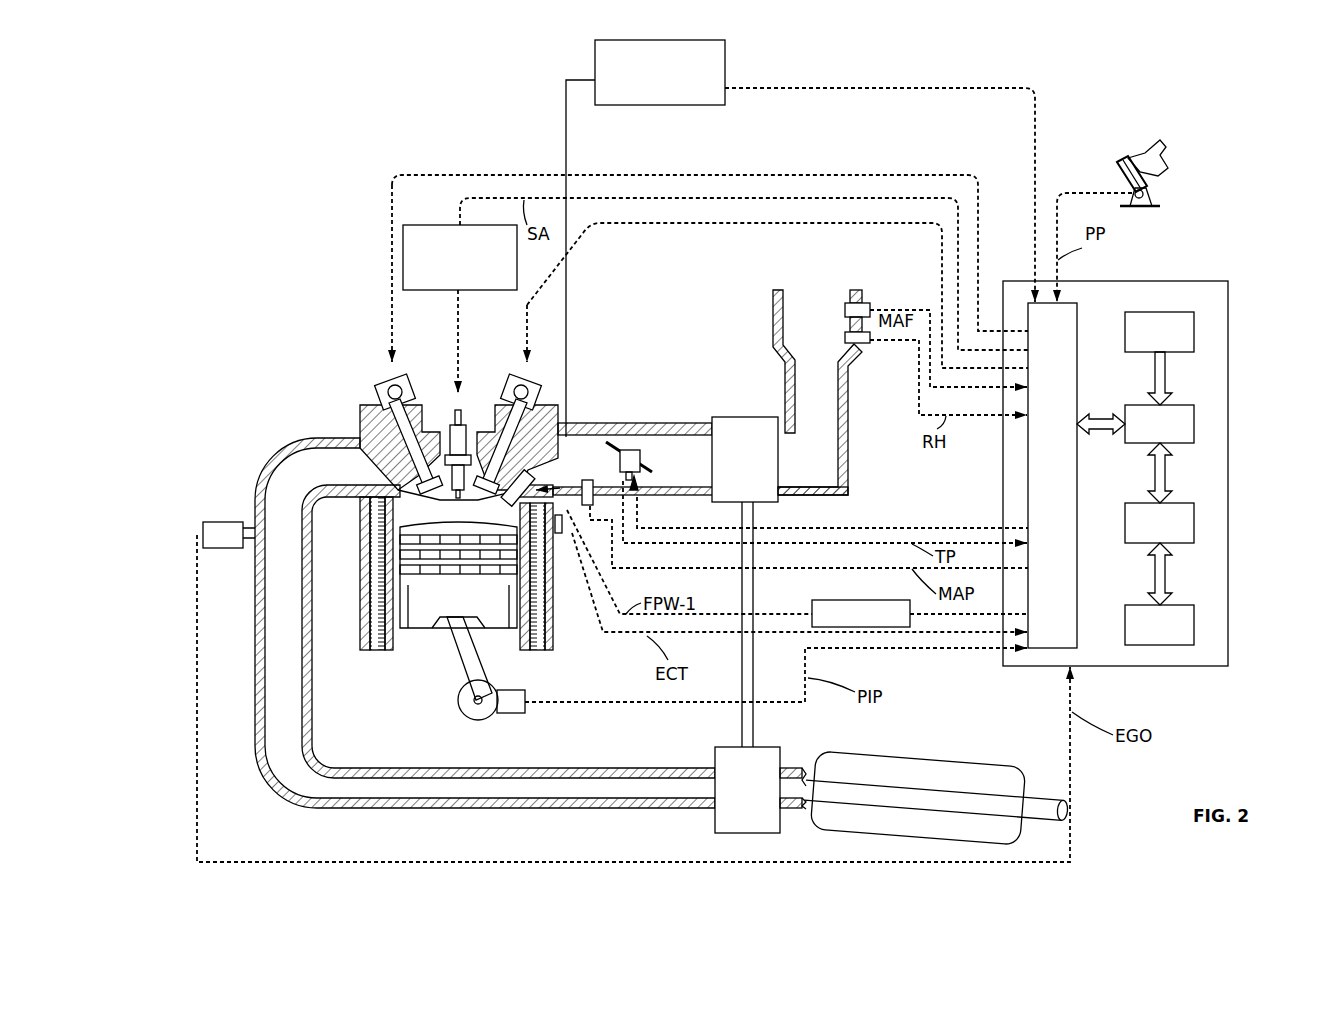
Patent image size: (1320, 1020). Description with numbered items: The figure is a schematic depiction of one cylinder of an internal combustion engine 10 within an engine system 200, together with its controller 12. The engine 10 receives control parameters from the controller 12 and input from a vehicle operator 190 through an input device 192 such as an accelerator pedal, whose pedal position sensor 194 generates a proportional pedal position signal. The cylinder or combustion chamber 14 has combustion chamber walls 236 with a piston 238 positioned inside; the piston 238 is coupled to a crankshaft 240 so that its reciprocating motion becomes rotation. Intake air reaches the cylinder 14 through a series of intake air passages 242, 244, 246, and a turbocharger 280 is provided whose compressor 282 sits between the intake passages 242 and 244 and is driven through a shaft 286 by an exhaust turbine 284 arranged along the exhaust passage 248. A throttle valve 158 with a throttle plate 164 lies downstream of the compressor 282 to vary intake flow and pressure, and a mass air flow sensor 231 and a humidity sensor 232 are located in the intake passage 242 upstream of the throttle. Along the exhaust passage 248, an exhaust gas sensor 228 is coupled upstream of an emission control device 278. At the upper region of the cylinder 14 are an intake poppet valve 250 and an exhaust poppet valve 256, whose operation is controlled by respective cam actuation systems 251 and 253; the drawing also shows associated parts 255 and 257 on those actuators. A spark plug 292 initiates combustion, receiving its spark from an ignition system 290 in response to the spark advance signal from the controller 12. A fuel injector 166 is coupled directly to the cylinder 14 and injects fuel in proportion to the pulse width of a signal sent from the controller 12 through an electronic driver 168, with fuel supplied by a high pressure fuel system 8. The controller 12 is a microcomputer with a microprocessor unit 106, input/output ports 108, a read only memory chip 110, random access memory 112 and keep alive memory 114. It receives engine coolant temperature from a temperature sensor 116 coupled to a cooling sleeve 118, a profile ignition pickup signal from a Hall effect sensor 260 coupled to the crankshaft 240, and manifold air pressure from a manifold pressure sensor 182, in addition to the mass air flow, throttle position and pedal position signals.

The high pressure fuel system 8 is at (726, 50).
The internal combustion engine 10 is at (305, 243).
The controller 12 is at (1225, 284).
The cylinder (combustion chamber) 14 is at (420, 525).
The microprocessor unit 106 is at (1196, 424).
The input/output ports 108 is at (1080, 312).
The read only memory (ROM) chip 110 is at (1196, 335).
The random access memory (RAM) 112 is at (1196, 523).
The keep alive memory (KAM) 114 is at (1196, 623).
The temperature sensor 116 is at (562, 536).
The cooling sleeve 118 is at (541, 605).
The throttle valve 158 is at (627, 448).
The throttle plate 164 is at (598, 443).
The fuel injector 166 is at (530, 486).
The electronic driver 168 is at (812, 602).
The manifold pressure sensor 182 is at (600, 520).
The vehicle operator 190 is at (1170, 152).
The input device 192 is at (1122, 170).
The pedal position sensor 194 is at (1152, 194).
The engine system 200 is at (180, 112).
The exhaust gas sensor 228 is at (203, 526).
The mass air flow sensor 231 is at (863, 301).
The humidity sensor 232 is at (858, 345).
The combustion chamber walls 236 is at (400, 642).
The piston 238 is at (443, 606).
The crankshaft 240 is at (468, 714).
The intake air passage 242 is at (830, 322).
The intake air passage 244 is at (698, 470).
The intake air passage 246 is at (597, 470).
The exhaust passage 248 is at (346, 476).
The intake poppet valve 250 is at (483, 456).
The cam actuation system 251 is at (508, 378).
The cam actuation system 253 is at (404, 378).
The intake valve position sensor 255 is at (540, 397).
The exhaust poppet valve 256 is at (354, 432).
The exhaust valve position sensor 257 is at (378, 394).
The Hall effect sensor 260 is at (511, 715).
The emission control device 278 is at (986, 768).
The turbocharger 280 is at (724, 732).
The compressor 282 is at (742, 416).
The exhaust turbine 284 is at (714, 816).
The shaft 286 is at (755, 712).
The ignition system 290 is at (416, 226).
The spark plug 292 is at (449, 442).